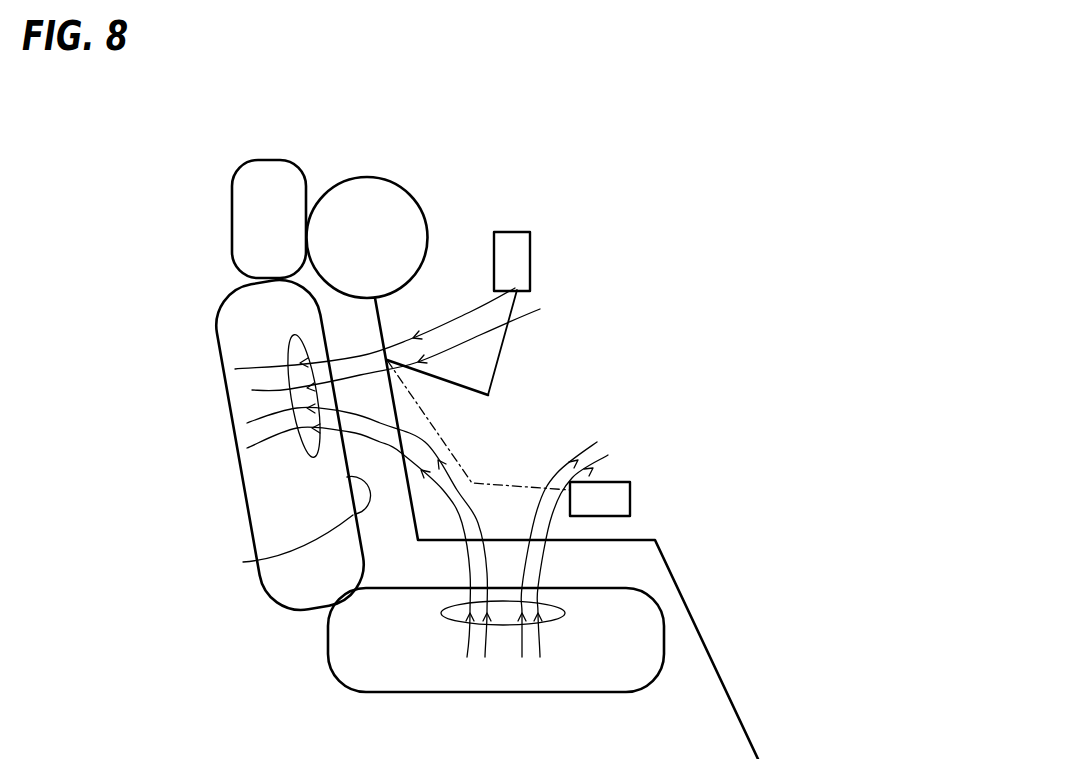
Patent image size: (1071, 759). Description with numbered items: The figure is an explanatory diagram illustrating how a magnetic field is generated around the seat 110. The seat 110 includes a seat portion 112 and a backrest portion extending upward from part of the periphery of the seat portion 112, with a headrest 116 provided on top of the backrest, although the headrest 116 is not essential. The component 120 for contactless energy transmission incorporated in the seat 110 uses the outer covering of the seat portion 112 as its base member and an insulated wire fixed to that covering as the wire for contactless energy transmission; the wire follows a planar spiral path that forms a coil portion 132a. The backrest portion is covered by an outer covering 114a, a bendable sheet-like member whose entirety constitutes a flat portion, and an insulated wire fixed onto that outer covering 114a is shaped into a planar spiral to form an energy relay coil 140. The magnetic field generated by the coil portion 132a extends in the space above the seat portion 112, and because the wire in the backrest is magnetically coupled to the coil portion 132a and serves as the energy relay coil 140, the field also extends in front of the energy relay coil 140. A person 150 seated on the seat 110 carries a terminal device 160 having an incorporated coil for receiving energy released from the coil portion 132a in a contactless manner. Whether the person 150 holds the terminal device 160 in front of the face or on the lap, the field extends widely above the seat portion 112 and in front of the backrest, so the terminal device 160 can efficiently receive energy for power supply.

The seat 110 is at (258, 148).
The headrest 116 is at (279, 160).
The outer covering 114a is at (235, 444).
The seat portion 112 is at (628, 598).
The person 150 is at (370, 178).
The component for contactless energy transmission 120 is at (563, 580).
The terminal device 160 is at (530, 258).
The energy relay coil 140 is at (305, 450).
The coil portion 132a is at (566, 613).